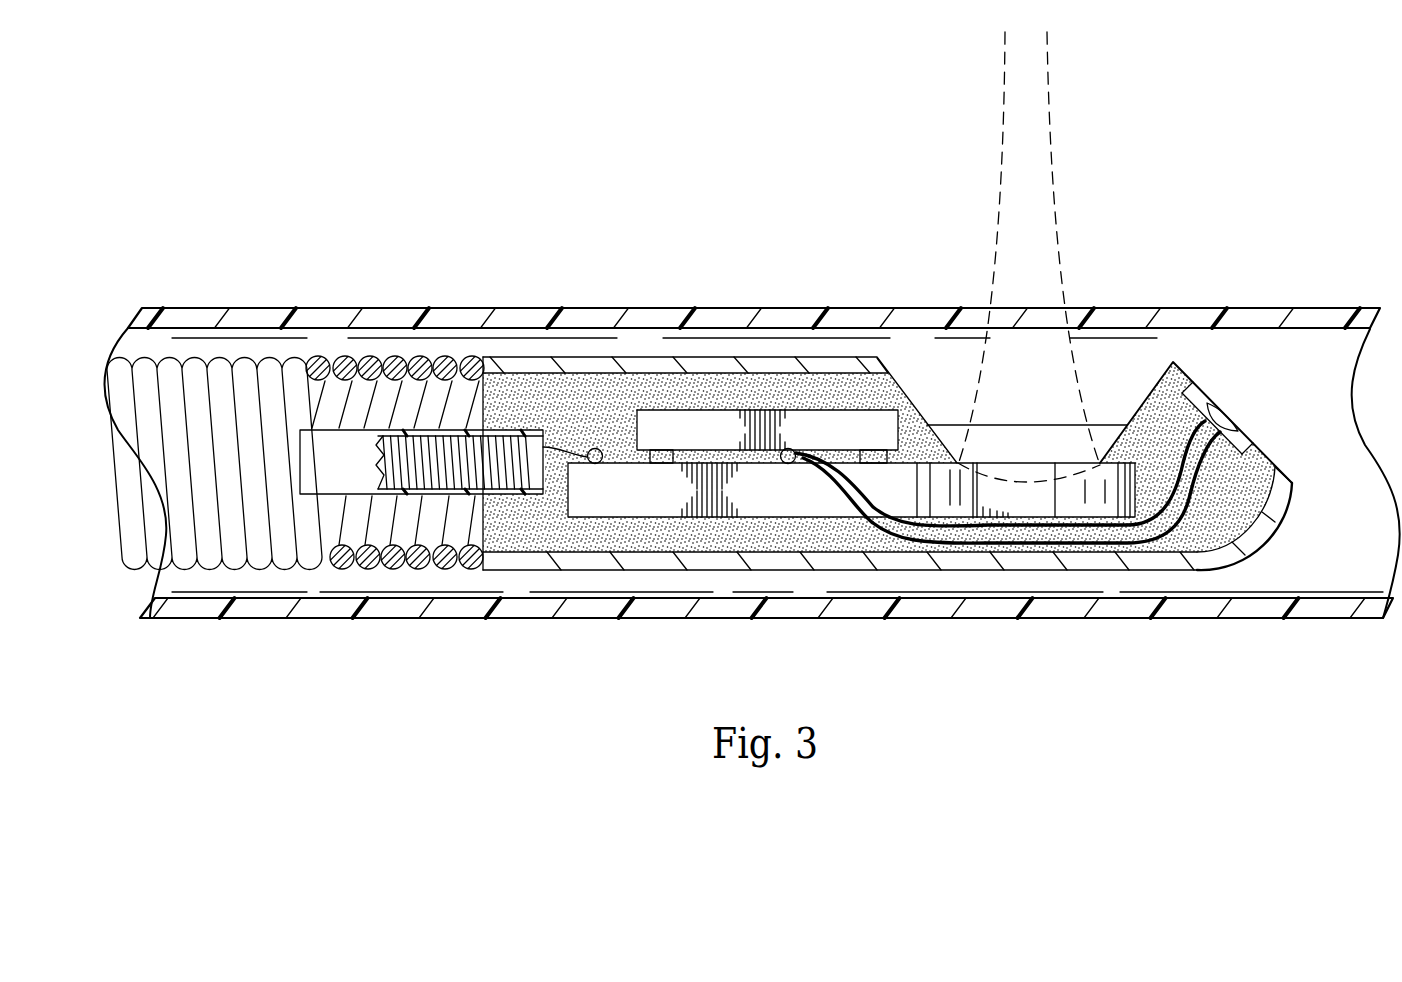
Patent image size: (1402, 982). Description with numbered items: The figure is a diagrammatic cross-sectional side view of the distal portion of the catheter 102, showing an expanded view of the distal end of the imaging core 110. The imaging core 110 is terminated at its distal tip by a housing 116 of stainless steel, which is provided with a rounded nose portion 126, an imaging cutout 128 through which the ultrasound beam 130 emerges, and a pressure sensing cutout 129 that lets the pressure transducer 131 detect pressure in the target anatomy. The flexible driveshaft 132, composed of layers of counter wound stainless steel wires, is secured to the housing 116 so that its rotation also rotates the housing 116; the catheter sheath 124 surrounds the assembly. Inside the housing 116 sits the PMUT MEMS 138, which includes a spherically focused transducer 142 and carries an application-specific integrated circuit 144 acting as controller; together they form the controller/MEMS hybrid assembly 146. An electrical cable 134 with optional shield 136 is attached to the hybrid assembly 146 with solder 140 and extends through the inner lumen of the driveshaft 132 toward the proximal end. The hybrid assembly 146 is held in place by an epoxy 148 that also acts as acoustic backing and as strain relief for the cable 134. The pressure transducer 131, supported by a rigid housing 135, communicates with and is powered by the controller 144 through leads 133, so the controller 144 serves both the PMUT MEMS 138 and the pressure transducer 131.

The catheter 102 is at (498, 172).
The imaging core 110 is at (329, 348).
The housing 116 is at (1108, 572).
The outer sheath 124 is at (1252, 618).
The rounded nose portion 126 is at (1294, 491).
The imaging cutout 128 is at (882, 372).
The pressure sensing cutout 129 is at (1284, 472).
The ultrasound beam 130 is at (1055, 212).
The pressure transducer 131 is at (1223, 408).
The flexible driveshaft 132 is at (170, 358).
The leads 133 is at (978, 520).
The electrical cable 134 is at (547, 503).
The rigid housing 135 is at (1188, 375).
The shield 136 is at (322, 450).
The PMUT MEMS 138 is at (800, 507).
The solder 140 is at (597, 448).
The spherically focused transducer 142 is at (998, 478).
The application-specific integrated circuit 144 is at (660, 412).
The controller/MEMS hybrid assembly 146 is at (665, 527).
The epoxy 148 is at (1243, 513).